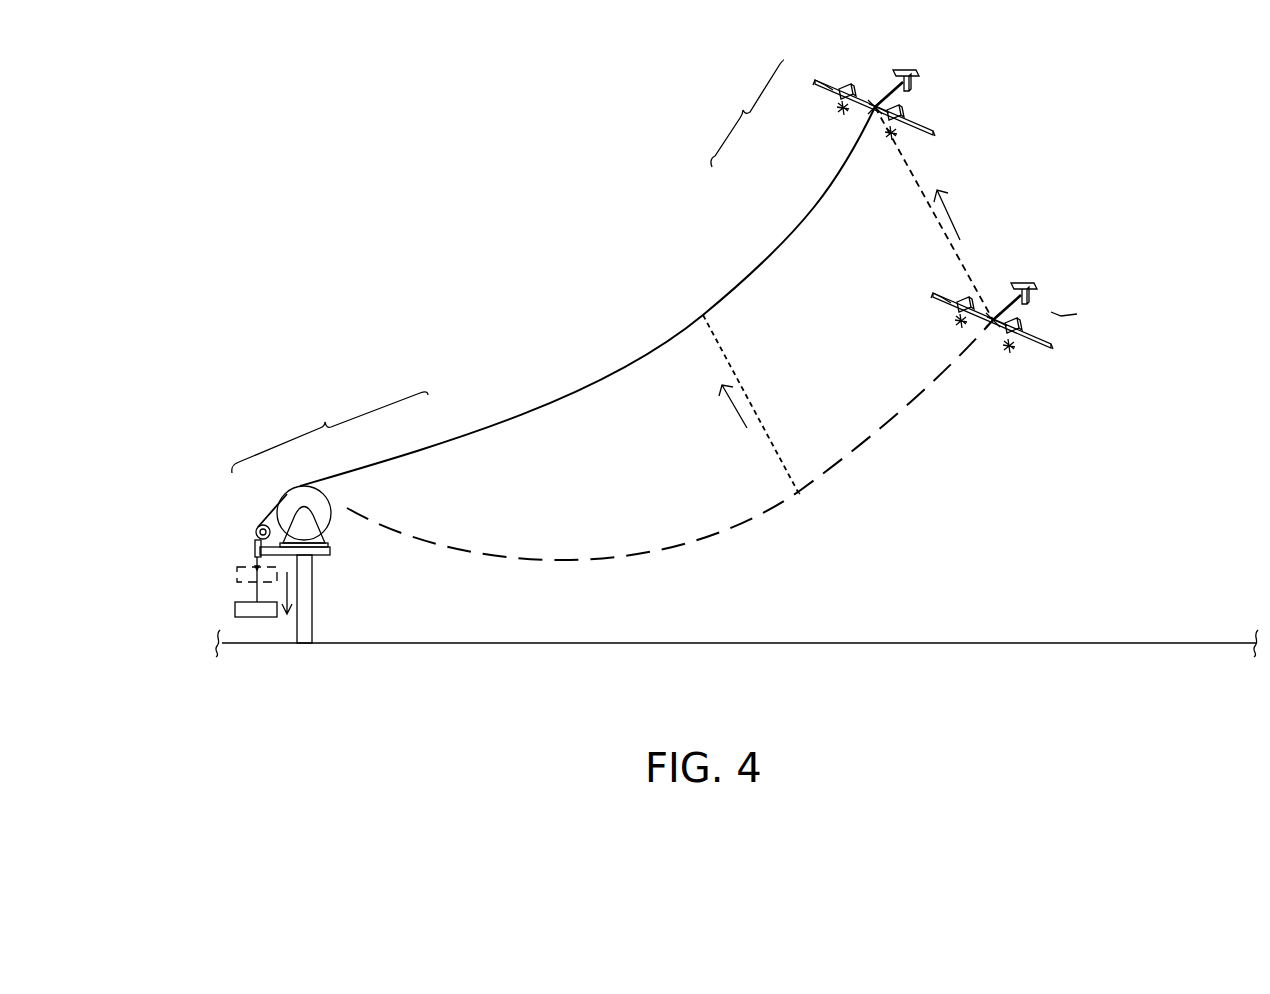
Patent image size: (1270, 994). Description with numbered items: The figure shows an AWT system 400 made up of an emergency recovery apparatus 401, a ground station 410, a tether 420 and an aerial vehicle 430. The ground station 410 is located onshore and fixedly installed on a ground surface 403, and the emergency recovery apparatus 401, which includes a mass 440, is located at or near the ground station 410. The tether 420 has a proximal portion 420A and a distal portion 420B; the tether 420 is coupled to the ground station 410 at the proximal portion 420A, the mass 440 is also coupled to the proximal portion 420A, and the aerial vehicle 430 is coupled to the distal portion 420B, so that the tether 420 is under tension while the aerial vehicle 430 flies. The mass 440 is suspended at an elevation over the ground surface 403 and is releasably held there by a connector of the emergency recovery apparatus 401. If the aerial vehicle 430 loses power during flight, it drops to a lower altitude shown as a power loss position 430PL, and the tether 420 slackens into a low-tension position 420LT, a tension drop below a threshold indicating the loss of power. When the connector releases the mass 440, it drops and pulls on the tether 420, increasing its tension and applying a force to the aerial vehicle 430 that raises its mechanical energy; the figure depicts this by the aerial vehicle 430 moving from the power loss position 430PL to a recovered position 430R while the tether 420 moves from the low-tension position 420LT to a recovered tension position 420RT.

The AWT system 400 is at (532, 172).
The emergency recovery apparatus 401 is at (273, 564).
The ground surface 403 is at (1145, 642).
The ground station 410 is at (313, 570).
The tether 420 is at (627, 335).
The proximal portion 420A is at (330, 432).
The distal portion 420B is at (739, 113).
The recovered tension position 420RT is at (705, 316).
The low-tension position 420LT is at (800, 490).
The aerial vehicle 430 is at (918, 103).
The recovered position 430R is at (874, 115).
The power loss position 430PL is at (995, 318).
The mass 440 is at (235, 610).